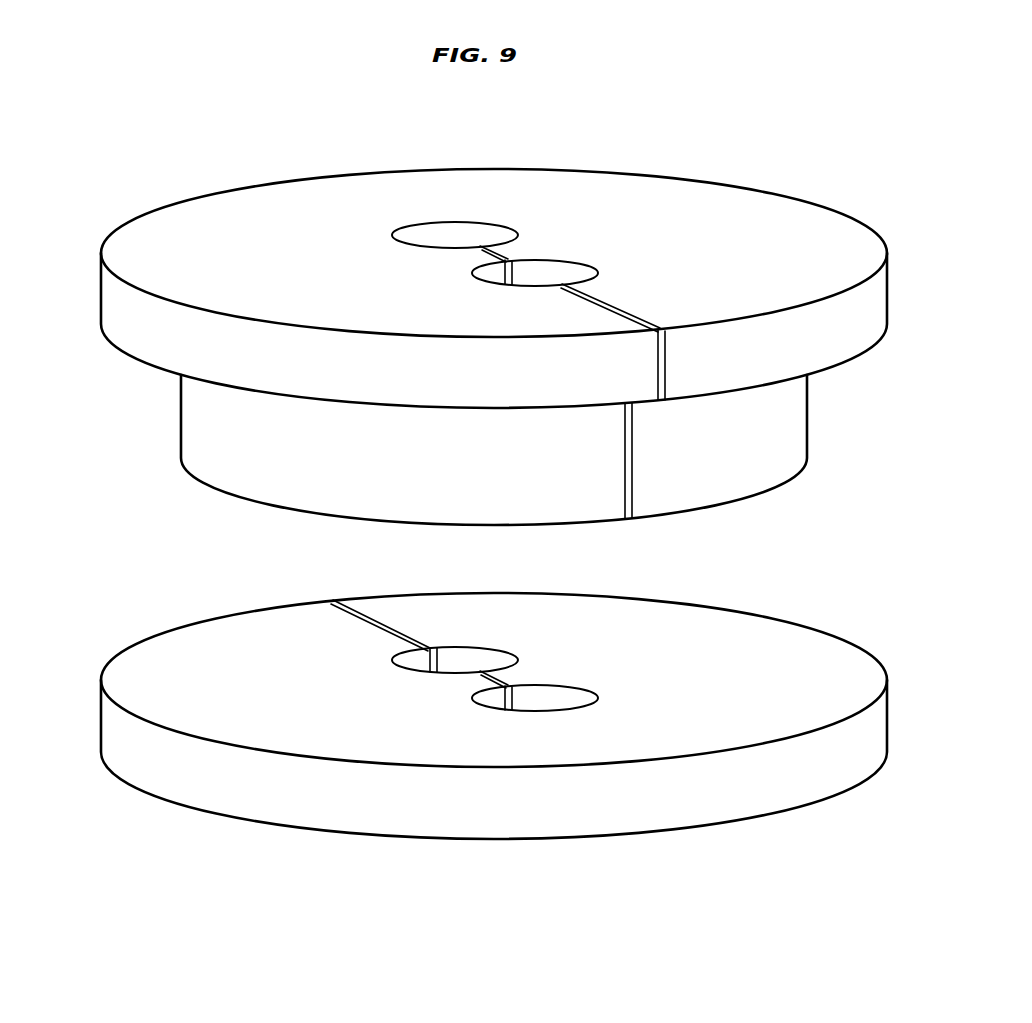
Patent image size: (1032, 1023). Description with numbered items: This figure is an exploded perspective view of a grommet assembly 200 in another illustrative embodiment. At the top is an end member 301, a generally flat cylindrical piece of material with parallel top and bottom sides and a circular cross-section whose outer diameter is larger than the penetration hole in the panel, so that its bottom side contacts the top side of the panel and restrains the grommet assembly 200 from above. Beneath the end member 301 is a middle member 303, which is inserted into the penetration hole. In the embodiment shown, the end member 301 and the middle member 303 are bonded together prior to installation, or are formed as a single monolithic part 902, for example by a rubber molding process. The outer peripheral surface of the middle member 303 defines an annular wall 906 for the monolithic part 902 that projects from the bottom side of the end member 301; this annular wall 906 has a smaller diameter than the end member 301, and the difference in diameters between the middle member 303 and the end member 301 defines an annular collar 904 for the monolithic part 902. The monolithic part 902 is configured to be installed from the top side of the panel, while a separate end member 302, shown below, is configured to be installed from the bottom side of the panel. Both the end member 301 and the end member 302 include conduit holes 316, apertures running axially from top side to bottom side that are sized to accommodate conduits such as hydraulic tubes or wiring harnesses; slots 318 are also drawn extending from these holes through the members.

The grommet assembly 200 is at (738, 118).
The end member 301 is at (873, 230).
The end member 302 is at (840, 639).
The middle member 303 is at (810, 405).
The conduit holes 316 is at (481, 223).
The slot 318 is at (478, 252).
The monolithic part 902 is at (73, 218).
The annular collar 904 is at (151, 380).
The annular wall 906 is at (318, 488).